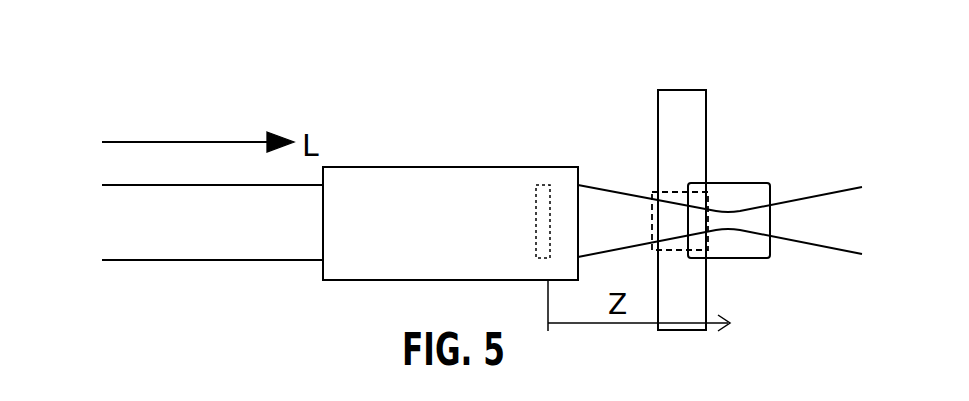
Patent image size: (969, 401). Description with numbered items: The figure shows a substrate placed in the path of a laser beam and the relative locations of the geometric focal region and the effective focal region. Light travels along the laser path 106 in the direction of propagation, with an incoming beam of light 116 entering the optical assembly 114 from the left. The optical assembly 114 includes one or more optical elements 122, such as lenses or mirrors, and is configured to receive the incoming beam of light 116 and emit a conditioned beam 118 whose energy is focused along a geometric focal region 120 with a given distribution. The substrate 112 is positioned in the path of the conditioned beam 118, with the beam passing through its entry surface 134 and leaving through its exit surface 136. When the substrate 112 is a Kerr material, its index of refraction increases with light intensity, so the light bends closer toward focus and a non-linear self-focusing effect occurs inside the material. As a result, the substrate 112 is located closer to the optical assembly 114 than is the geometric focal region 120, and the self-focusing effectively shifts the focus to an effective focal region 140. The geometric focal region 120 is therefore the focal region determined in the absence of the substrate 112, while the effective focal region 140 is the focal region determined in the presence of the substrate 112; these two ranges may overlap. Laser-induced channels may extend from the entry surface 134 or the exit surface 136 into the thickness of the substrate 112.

The laser path 106 is at (322, 92).
The substrate 112 is at (682, 96).
The optical assembly 114 is at (442, 167).
The incoming beam of light 116 is at (241, 261).
The conditioned beam 118 is at (604, 189).
The geometric focal region 120 is at (770, 173).
The optical elements 122 is at (547, 185).
The entry surface 134 is at (657, 106).
The exit surface 136 is at (707, 103).
The effective focal region 140 is at (708, 258).